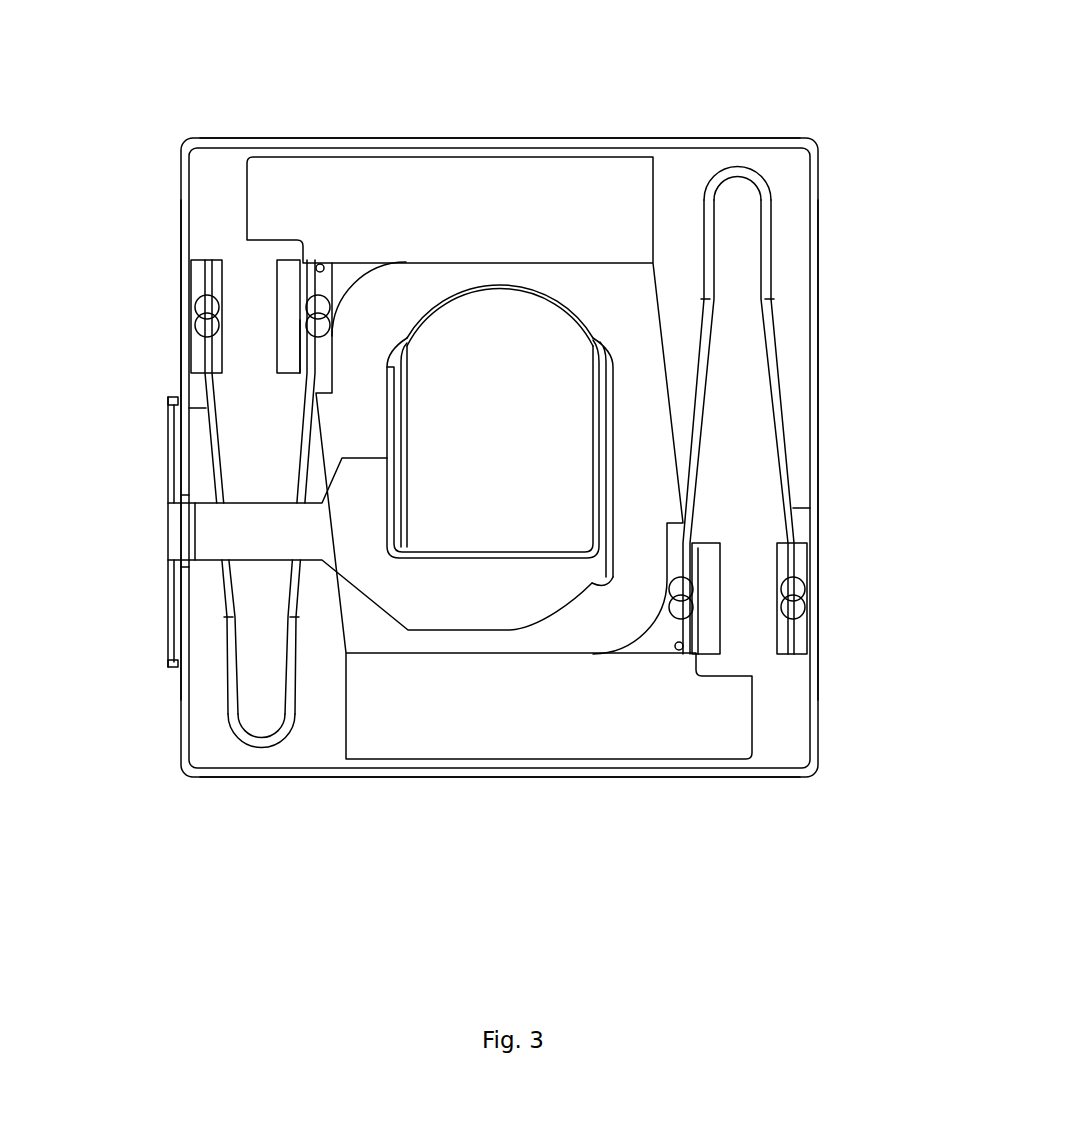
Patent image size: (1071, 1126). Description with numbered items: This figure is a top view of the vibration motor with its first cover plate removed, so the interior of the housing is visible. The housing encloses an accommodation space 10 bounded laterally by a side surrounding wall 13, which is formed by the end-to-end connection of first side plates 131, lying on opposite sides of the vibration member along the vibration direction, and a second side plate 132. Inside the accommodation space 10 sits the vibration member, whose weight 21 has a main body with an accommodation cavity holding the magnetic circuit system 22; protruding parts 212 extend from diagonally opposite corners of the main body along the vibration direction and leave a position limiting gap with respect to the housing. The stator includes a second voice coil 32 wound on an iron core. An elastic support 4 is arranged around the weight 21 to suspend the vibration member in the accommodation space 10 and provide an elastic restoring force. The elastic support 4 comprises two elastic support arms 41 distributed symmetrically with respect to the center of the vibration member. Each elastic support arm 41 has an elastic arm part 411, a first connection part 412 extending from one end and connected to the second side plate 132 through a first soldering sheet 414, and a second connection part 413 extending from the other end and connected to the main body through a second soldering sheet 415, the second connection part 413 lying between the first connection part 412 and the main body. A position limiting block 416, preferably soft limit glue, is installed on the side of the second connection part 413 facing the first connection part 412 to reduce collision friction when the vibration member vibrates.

The accommodation space 10 is at (787, 200).
The side surrounding wall 13 is at (742, 138).
The first side plate 131 is at (543, 138).
The second side plate 132 is at (822, 250).
The weight 21 is at (382, 183).
The protruding part 212 is at (262, 183).
The magnetic circuit system 22 is at (563, 432).
The second voice coil 32 is at (173, 610).
The elastic support 4 is at (535, 525).
The elastic support arm 41 is at (778, 388).
The elastic arm part 411 is at (252, 742).
The first connection part 412 is at (208, 290).
The second connection part 413 is at (315, 362).
The first soldering sheet 414 is at (198, 378).
The second soldering sheet 415 is at (303, 350).
The position limiting block 416 is at (285, 275).